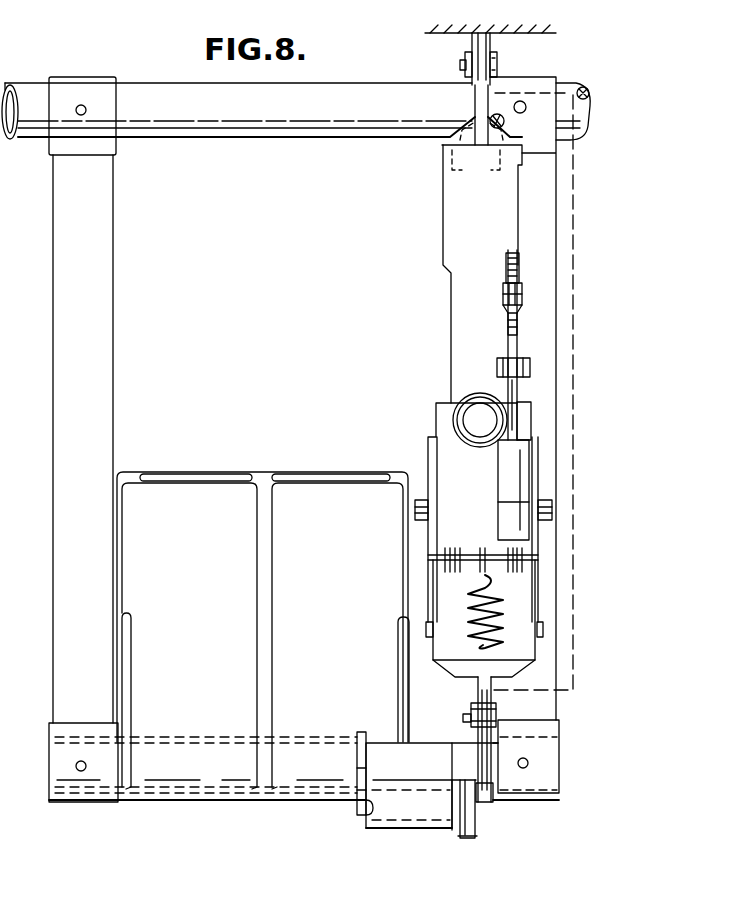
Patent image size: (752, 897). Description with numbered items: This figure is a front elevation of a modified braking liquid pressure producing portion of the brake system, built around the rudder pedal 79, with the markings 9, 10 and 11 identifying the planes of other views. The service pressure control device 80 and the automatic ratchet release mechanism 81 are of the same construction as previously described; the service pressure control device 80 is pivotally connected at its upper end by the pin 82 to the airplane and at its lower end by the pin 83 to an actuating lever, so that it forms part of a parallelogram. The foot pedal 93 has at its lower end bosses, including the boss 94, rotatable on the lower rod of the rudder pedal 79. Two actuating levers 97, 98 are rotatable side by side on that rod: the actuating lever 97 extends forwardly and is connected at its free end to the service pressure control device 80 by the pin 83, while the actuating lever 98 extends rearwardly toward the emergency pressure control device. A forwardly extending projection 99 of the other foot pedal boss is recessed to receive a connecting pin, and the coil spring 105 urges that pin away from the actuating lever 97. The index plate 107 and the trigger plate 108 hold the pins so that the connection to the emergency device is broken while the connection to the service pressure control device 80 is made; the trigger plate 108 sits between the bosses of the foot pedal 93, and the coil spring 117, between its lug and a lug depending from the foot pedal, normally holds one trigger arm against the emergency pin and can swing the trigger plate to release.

The section line 9- 9 is at (355, 628).
The section line 10- 10 is at (473, 708).
The service pressure control device 11 is at (486, 24).
The rudder pedal 79 is at (570, 426).
The service pressure control device 80 is at (442, 294).
The automatic ratchet release mechanism 81 is at (520, 232).
The pin 82 is at (460, 62).
The pin 83 is at (498, 712).
The foot pedal 93 is at (288, 470).
The boss 94 is at (318, 786).
The actuating lever 97 is at (495, 790).
The actuating lever 98 is at (468, 833).
The projection 99 is at (393, 767).
The coil spring 105 is at (409, 862).
The index plate 107 is at (457, 830).
The trigger plate 108 is at (356, 748).
The coil spring 117 is at (388, 808).